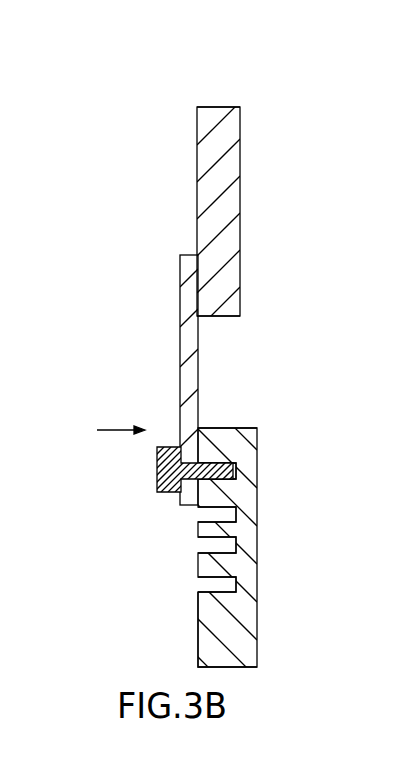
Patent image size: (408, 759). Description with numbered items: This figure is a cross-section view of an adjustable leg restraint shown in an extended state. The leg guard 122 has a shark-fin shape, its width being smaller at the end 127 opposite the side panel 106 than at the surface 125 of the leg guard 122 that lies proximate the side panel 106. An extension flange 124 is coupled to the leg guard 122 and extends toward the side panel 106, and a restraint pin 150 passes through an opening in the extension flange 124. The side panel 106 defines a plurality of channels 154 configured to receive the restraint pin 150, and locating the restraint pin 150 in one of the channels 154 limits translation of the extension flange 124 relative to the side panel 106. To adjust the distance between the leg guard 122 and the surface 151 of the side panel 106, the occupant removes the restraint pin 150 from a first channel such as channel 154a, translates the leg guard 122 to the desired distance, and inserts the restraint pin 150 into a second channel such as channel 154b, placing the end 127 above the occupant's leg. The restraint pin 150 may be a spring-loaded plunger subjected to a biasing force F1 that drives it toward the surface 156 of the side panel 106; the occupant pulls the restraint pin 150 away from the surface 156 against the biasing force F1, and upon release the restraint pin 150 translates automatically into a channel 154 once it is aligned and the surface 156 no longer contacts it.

The side panel 106 is at (257, 442).
The leg guard 122 is at (232, 276).
The extension flange 124 is at (180, 355).
The surface 125 is at (225, 316).
The end 127 is at (214, 107).
The restraint pin 150 is at (157, 468).
The surface 151 is at (238, 428).
The channels 154 is at (188, 514).
The first channel 154a is at (188, 586).
The second channel 154b is at (252, 466).
The surface 156 is at (198, 634).
The biasing force F1 is at (111, 428).